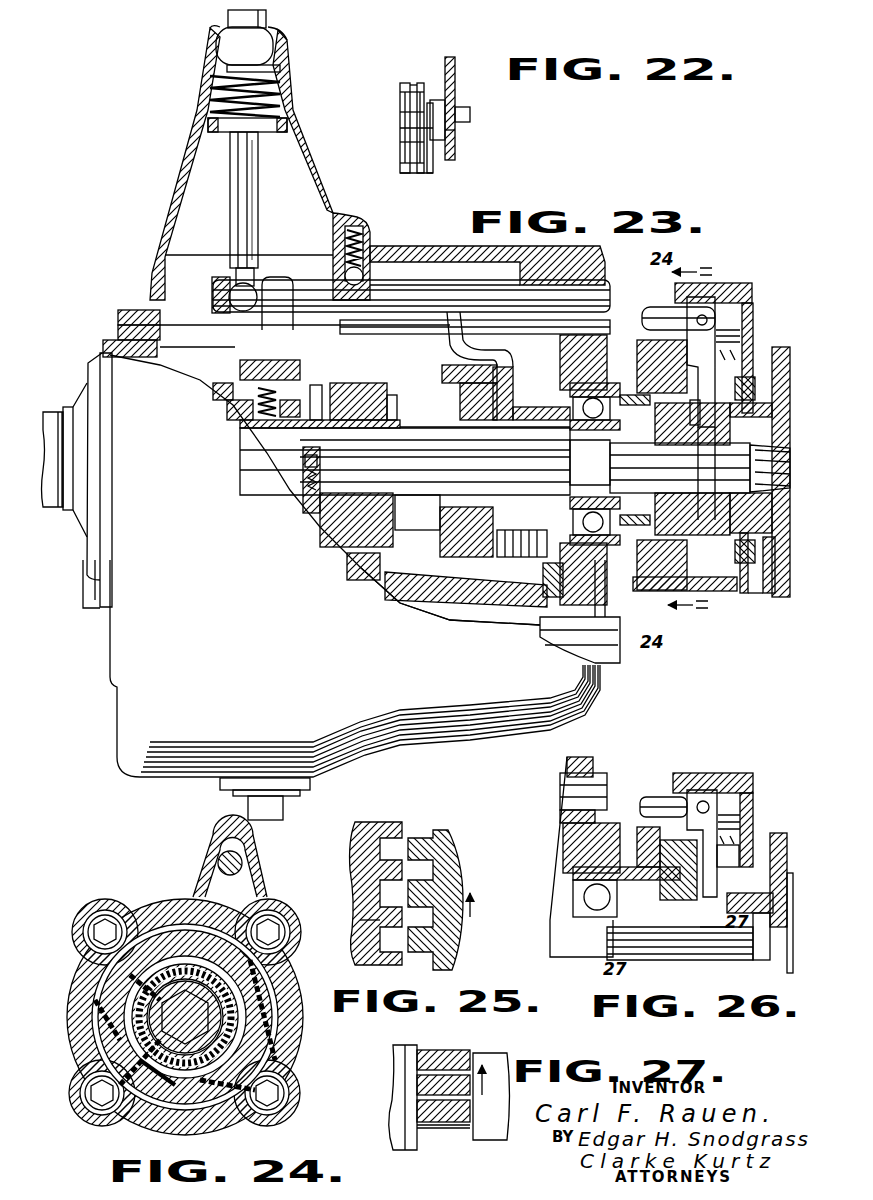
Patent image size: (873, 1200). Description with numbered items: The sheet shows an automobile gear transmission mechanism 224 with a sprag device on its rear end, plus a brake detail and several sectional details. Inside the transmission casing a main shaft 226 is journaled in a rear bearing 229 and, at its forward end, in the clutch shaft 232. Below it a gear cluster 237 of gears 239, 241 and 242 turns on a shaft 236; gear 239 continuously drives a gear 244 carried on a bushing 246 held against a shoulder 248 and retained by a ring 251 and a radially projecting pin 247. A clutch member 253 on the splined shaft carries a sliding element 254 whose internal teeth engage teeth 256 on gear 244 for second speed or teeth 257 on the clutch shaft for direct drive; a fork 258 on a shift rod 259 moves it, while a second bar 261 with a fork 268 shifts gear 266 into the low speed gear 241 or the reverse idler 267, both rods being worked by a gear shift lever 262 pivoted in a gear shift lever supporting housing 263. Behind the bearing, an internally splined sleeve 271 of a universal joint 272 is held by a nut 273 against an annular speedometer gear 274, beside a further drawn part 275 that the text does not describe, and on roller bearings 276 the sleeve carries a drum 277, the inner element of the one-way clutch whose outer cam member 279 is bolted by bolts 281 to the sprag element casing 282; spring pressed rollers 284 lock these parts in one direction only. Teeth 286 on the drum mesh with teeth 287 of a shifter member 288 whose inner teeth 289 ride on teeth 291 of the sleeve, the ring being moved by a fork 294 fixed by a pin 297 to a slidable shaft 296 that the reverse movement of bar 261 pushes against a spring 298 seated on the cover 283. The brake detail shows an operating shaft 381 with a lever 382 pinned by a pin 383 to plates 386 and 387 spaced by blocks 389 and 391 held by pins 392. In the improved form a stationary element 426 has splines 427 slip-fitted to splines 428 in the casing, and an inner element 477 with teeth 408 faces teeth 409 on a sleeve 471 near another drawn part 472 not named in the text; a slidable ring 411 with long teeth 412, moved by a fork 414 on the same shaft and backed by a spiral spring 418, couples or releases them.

In FIG. 23, the gear transmission mechanism 224 is at (120, 705).
In FIG. 23, the main shaft 226 is at (420, 440).
In FIG. 23, the bearing 229 is at (565, 398).
In FIG. 23, the clutch shaft 232 is at (55, 415).
In FIG. 23, the shaft 236 is at (542, 620).
In FIG. 23, the gear cluster 237 is at (418, 592).
In FIG. 23, the gear 239 is at (360, 560).
In FIG. 23, the low speed gear 241 is at (410, 590).
In FIG. 23, the gear 242 is at (505, 590).
In FIG. 23, the gear 244 is at (350, 395).
In FIG. 23, the bushing 246 is at (392, 400).
In FIG. 23, the radially projecting pin 247 is at (305, 497).
In FIG. 23, the shoulder 248 is at (380, 530).
In FIG. 23, the ring 251 is at (300, 470).
In FIG. 23, the clutch member 253 is at (250, 430).
In FIG. 23, the sliding element 254 is at (252, 368).
In FIG. 23, the teeth 256 is at (318, 385).
In FIG. 23, the teeth 257 is at (220, 398).
In FIG. 23, the fork 258 is at (272, 300).
In FIG. 23, the shift rod 259 is at (368, 258).
In FIG. 23, the bar 261 is at (440, 290).
In FIG. 23, the gear shift lever 262 is at (240, 216).
In FIG. 23, the gear shift lever supporting housing 263 is at (303, 133).
In FIG. 23, the gear 266 is at (492, 428).
In FIG. 23, the reverse idler 267 is at (545, 525).
In FIG. 23, the fork 268 is at (480, 290).
In FIG. 23, the internally splined sleeve 271 is at (775, 415).
In FIG. 23, the universal joint 272 is at (790, 380).
In FIG. 23, the nut 273 is at (603, 410).
In FIG. 23, the speedometer gear 274 is at (615, 440).
In FIG. 23, the bearing block 275 is at (778, 450).
In FIG. 23, the roller bearings 276 is at (603, 525).
In FIG. 24, the drum 277 is at (233, 1003).
In FIG. 25, the drum 277 is at (358, 920).
In FIG. 24, the cam member 279 is at (90, 980).
In FIG. 24, the bolts 281 is at (270, 925).
In FIG. 23, the sprag element casing 282 is at (715, 592).
In FIG. 24, the sprag element casing 282 is at (152, 900).
In FIG. 26, the sprag element casing 282 is at (703, 773).
In FIG. 23, the cover 283 is at (750, 592).
In FIG. 23, the spring pressed rollers 284 is at (643, 387).
In FIG. 24, the spring pressed rollers 284 is at (85, 1058).
In FIG. 25, the teeth 286 is at (393, 822).
In FIG. 25, the teeth 287 is at (425, 838).
In FIG. 23, the shifter member 288 is at (717, 383).
In FIG. 25, the shifter member 288 is at (460, 855).
In FIG. 23, the teeth 289 is at (780, 525).
In FIG. 23, the teeth 291 is at (775, 500).
In FIG. 23, the fork 294 is at (700, 357).
In FIG. 23, the slidable shaft 296 is at (742, 318).
In FIG. 26, the slidable shaft 296 is at (735, 797).
In FIG. 23, the pin 297 is at (703, 315).
In FIG. 23, the spring 298 is at (716, 307).
In FIG. 26, the spring 298 is at (733, 785).
In FIG. 22, the operating shaft 381 is at (470, 110).
In FIG. 22, the lever 382 is at (455, 131).
In FIG. 22, the pin 383 is at (407, 170).
In FIG. 22, the plate 386 is at (403, 92).
In FIG. 22, the plate 387 is at (418, 83).
In FIG. 22, the block 389 is at (402, 148).
In FIG. 22, the block 391 is at (405, 120).
In FIG. 22, the pins 392 is at (450, 62).
In FIG. 26, the teeth 408 is at (700, 900).
In FIG. 27, the teeth 408 is at (418, 1125).
In FIG. 26, the teeth 409 is at (725, 913).
In FIG. 27, the teeth 409 is at (460, 1128).
In FIG. 26, the slidable ring 411 is at (727, 845).
In FIG. 27, the teeth 412 is at (450, 1053).
In FIG. 26, the fork 414 is at (718, 817).
In FIG. 26, the spiral spring 418 is at (785, 870).
In FIG. 26, the stationary element 426 is at (570, 870).
In FIG. 26, the teeth or splines 427 is at (667, 830).
In FIG. 26, the teeth or splines 428 is at (650, 800).
In FIG. 26, the sleeve 471 is at (790, 912).
In FIG. 27, the sleeve 471 is at (480, 1100).
In FIG. 26, the bearing 472 is at (610, 880).
In FIG. 27, the inner element 477 is at (400, 1095).